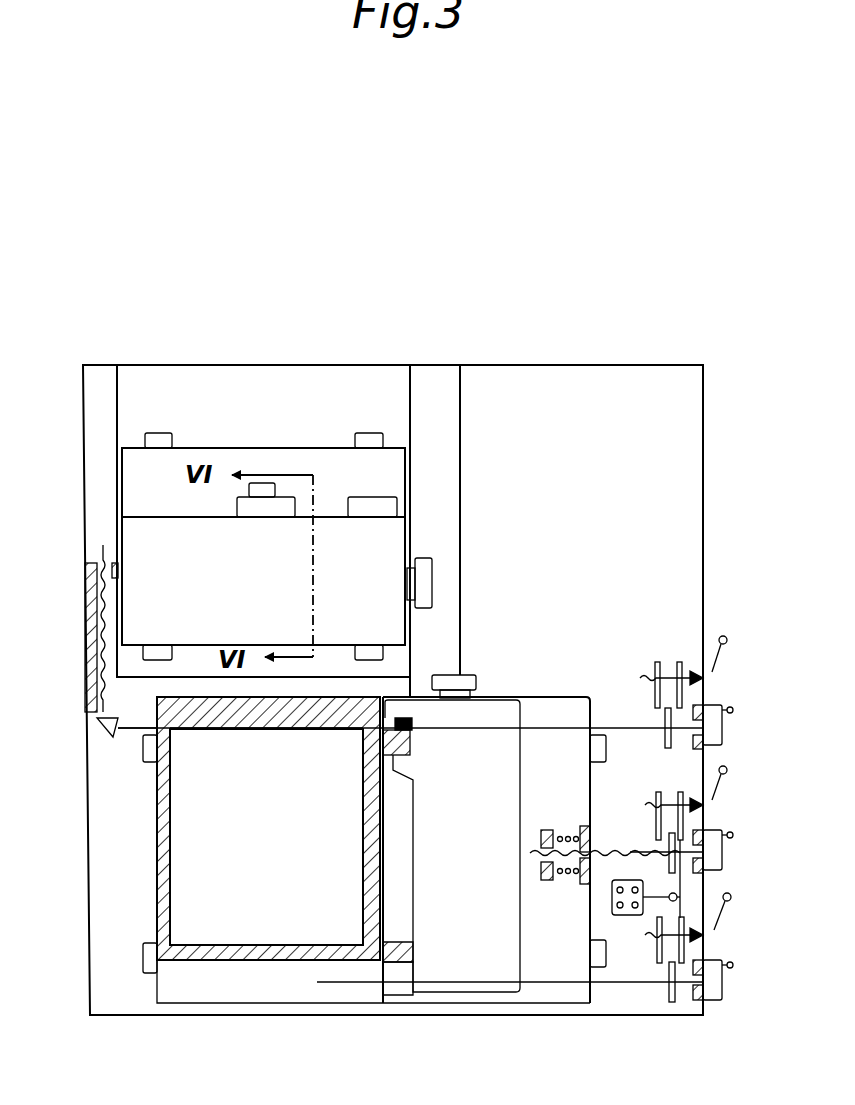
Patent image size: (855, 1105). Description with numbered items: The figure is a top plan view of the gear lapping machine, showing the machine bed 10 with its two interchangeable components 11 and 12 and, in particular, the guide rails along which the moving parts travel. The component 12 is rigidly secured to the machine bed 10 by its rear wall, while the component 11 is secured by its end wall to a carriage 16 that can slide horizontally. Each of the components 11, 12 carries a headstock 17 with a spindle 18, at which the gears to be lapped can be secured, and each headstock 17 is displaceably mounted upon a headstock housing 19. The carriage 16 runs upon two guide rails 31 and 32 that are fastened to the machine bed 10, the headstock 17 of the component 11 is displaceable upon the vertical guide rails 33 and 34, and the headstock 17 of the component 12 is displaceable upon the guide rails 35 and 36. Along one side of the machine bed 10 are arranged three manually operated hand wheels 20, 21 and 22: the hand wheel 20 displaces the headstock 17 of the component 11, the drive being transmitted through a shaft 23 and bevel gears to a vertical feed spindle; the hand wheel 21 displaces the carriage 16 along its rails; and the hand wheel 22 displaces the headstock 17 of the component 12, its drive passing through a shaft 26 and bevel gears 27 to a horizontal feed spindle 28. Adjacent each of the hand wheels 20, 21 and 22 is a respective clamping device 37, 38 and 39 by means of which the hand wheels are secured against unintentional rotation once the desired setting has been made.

The machine bed 10 is at (642, 355).
The changeable component 11 is at (548, 1004).
The changeable component 12 is at (140, 355).
The carriage 16 is at (203, 987).
The headstock 17 is at (430, 713).
The spindle 18 is at (424, 558).
The headstock housing 19 is at (275, 928).
The hand wheel 20 is at (715, 1001).
The hand wheel 21 is at (694, 851).
The hand wheel 22 is at (712, 727).
The shaft 23 is at (632, 983).
The shaft 26 is at (228, 729).
The bevel gears 27 is at (100, 733).
The horizontal feed spindle 28 is at (92, 655).
The guide rail 31 is at (143, 958).
The guide rail 32 is at (143, 752).
The vertical guide rail 33 is at (410, 968).
The vertical guide rail 34 is at (410, 742).
The guide rail 35 is at (160, 433).
The guide rail 36 is at (368, 433).
The clamping device 37 is at (702, 928).
The clamping device 38 is at (702, 803).
The clamping device 39 is at (699, 672).